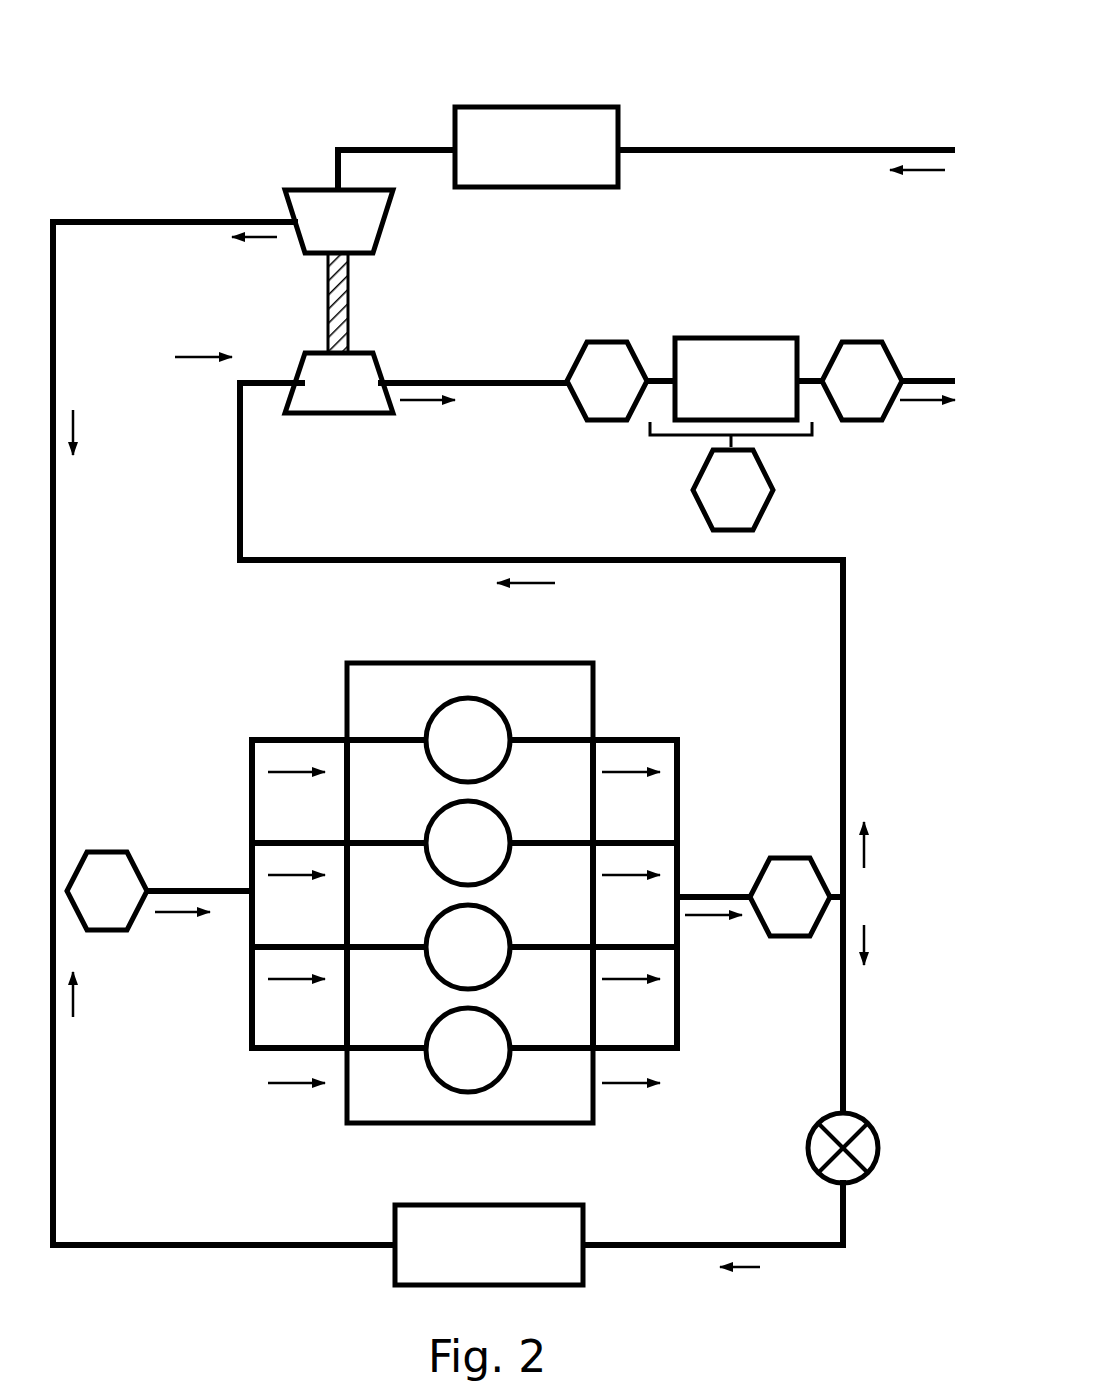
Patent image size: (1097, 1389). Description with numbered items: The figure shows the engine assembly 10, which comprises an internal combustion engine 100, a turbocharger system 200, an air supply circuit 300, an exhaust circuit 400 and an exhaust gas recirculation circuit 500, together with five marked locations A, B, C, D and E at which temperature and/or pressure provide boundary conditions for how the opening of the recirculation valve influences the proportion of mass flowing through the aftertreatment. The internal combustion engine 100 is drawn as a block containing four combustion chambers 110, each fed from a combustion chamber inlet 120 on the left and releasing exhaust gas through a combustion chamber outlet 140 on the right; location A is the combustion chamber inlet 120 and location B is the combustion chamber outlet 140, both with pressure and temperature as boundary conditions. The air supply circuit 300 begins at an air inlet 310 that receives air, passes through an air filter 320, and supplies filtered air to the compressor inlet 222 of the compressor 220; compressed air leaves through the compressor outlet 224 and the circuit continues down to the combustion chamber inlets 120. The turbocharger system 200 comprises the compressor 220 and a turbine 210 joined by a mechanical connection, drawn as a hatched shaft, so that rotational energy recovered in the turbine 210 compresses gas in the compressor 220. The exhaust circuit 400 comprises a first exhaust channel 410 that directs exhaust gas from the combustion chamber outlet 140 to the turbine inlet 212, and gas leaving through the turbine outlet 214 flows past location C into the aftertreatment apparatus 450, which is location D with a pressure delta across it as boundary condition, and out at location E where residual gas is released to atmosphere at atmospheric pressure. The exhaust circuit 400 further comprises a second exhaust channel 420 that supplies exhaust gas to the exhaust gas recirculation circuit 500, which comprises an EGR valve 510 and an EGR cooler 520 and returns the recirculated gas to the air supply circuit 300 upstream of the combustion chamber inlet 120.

The engine assembly 10 is at (787, 58).
The internal combustion engine 100 is at (390, 662).
The combustion chamber 110 is at (446, 756).
The combustion chamber inlet 120 is at (338, 739).
The combustion chamber outlet 140 is at (604, 725).
The turbocharger system 200 is at (420, 286).
The turbine 210 is at (380, 352).
The turbine inlet 212 is at (300, 380).
The turbine outlet 214 is at (380, 380).
The compressor 220 is at (390, 230).
The compressor inlet 222 is at (334, 190).
The compressor outlet 224 is at (294, 232).
The air supply circuit 300 is at (134, 162).
The air inlet 310 is at (700, 149).
The air filter 320 is at (512, 166).
The exhaust circuit 400 is at (796, 544).
The first exhaust channel 410 is at (840, 742).
The second exhaust channel 420 is at (843, 994).
The aftertreatment apparatus 450 is at (753, 338).
The exhaust gas recirculation circuit 500 is at (844, 1282).
The EGR valve 510 is at (876, 1126).
The EGR cooler 520 is at (465, 1262).